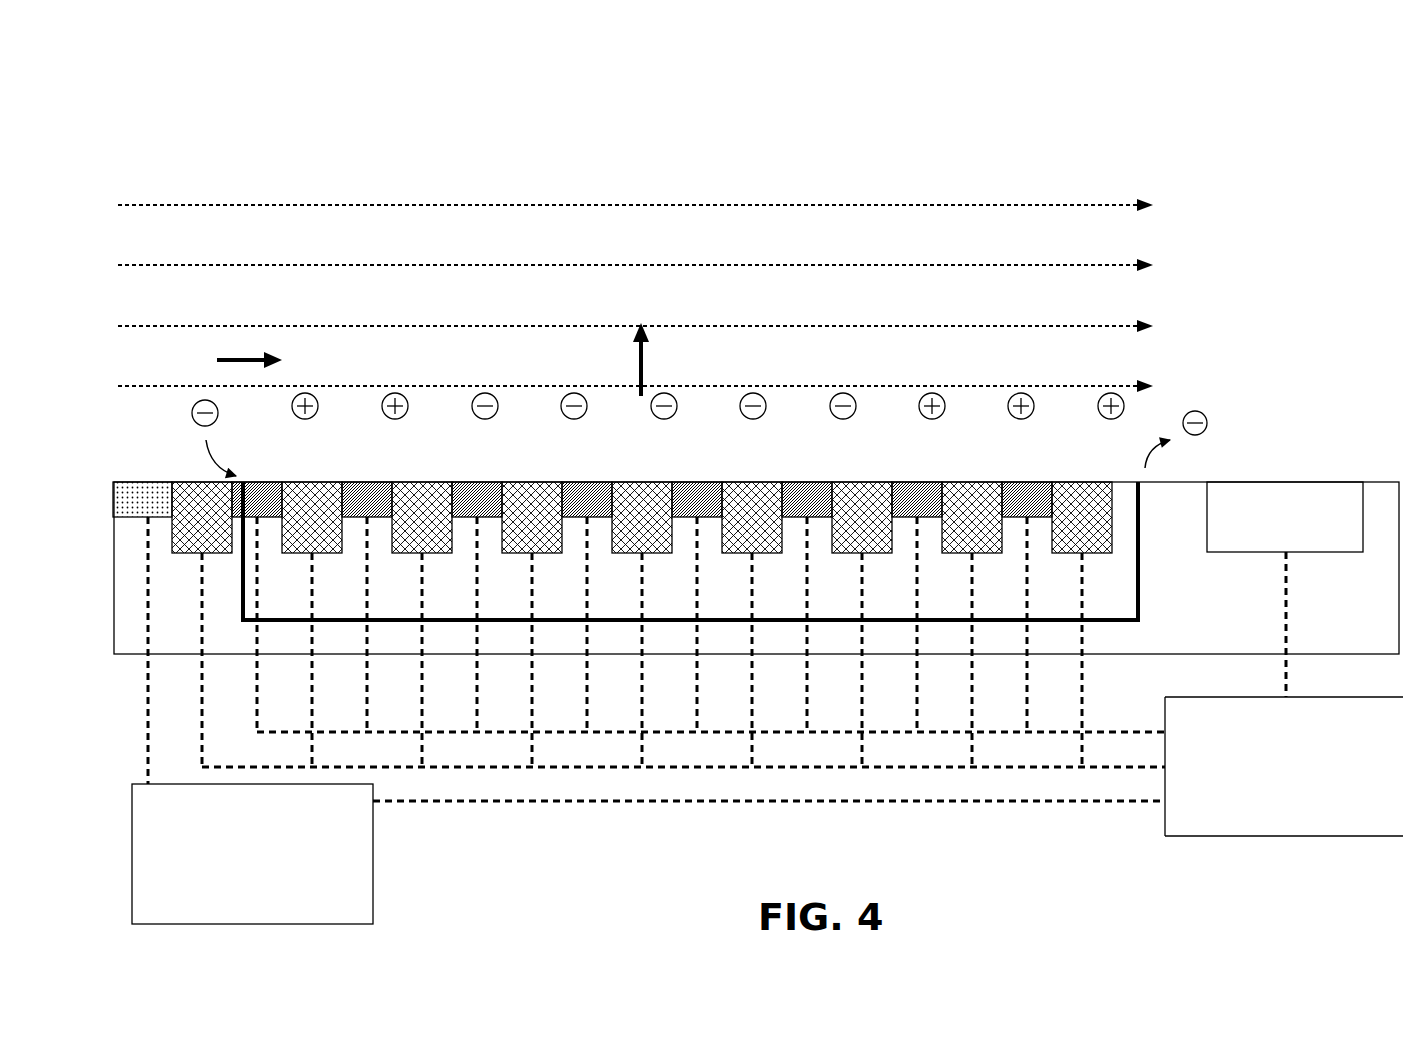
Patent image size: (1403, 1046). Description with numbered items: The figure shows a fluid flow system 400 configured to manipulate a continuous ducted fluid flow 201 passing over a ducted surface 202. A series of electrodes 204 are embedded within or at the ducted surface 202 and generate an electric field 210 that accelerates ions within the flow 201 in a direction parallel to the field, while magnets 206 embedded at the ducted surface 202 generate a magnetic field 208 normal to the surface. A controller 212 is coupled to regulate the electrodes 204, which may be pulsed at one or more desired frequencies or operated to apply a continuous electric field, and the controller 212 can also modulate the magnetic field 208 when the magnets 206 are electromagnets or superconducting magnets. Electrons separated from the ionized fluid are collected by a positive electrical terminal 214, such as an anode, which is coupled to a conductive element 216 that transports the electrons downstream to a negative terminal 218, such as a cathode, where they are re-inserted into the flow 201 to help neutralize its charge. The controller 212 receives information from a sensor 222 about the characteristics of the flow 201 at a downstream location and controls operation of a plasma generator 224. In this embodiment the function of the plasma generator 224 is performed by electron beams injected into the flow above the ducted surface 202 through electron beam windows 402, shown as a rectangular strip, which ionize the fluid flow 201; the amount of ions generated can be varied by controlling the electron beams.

The fluid flow system 400 is at (920, 104).
The ducted fluid flow 201 is at (440, 181).
The electric field 210 is at (223, 348).
The magnetic field 208 is at (661, 348).
The ducted surface 202 is at (1185, 486).
The electron beam windows 402 is at (130, 482).
The electrodes 204 is at (313, 483).
The magnets 206 is at (258, 483).
The negative terminal 218 is at (1140, 560).
The positive electrical terminal 214 is at (245, 622).
The conductive element 216 is at (637, 622).
The sensor 222 is at (1285, 589).
The controller 212 is at (888, 766).
The plasma generator 224 is at (252, 854).